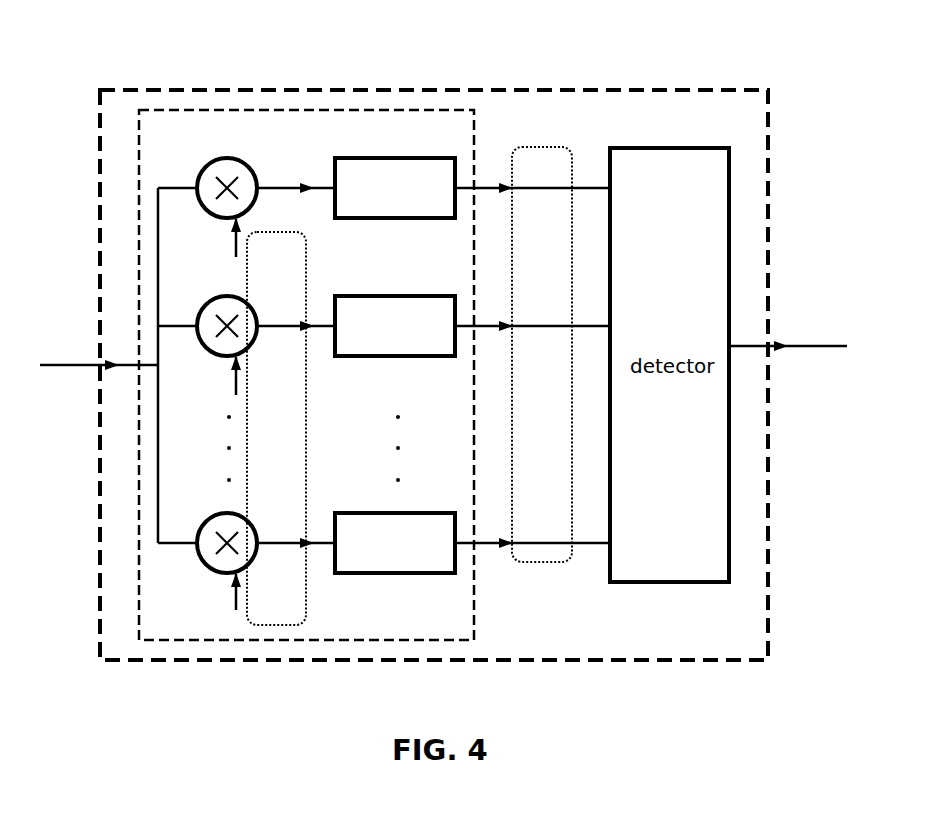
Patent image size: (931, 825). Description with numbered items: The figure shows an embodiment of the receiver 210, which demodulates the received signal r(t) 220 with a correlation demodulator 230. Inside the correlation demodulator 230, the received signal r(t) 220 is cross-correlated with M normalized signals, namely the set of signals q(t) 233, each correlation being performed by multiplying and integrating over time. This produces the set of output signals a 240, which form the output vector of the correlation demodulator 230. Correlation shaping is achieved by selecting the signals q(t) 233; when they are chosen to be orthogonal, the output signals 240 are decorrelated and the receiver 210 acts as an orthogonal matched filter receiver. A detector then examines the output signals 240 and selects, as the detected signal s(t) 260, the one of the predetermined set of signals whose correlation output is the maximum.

The receiver 210 is at (730, 87).
The received signal r(t) 220 is at (58, 368).
The correlation demodulator 230 is at (198, 110).
The set of signals q_1(t), q_2(t) ... q_m(t) 233 is at (307, 405).
The set of output signals a_1, a_2 ... a_m 240 is at (532, 562).
The detected signal s_k(t) 260 is at (825, 348).